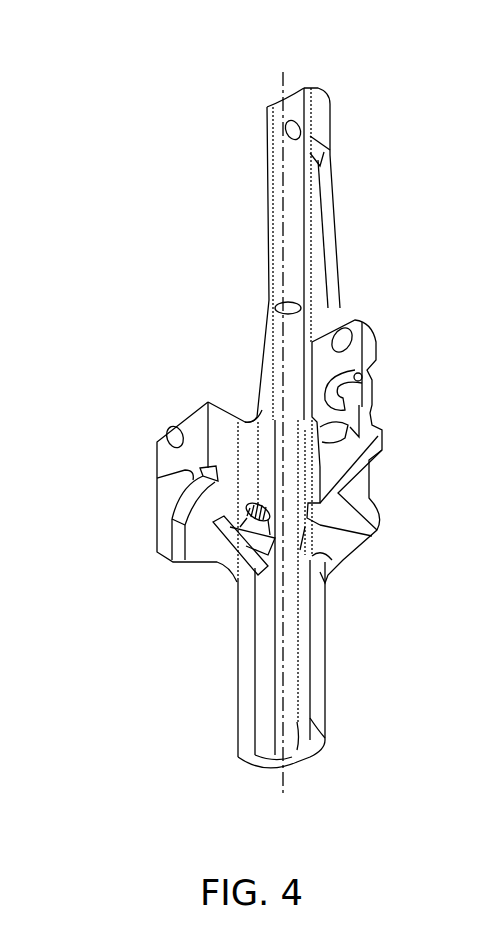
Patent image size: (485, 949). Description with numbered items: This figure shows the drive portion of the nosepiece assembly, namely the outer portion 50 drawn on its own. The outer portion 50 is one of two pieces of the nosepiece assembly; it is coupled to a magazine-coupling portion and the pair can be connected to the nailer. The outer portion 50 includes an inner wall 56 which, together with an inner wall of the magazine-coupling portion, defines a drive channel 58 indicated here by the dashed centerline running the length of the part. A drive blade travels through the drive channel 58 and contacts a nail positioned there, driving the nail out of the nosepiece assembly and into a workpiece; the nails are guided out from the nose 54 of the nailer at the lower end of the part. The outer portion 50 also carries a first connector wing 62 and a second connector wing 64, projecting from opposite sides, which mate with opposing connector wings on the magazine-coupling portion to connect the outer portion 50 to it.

The outer portion 50 is at (138, 135).
The nose 54 is at (320, 662).
The inner wall 56 is at (262, 713).
The drive channel 58 is at (296, 78).
The first connector wing 62 is at (362, 326).
The second connector wing 64 is at (158, 440).